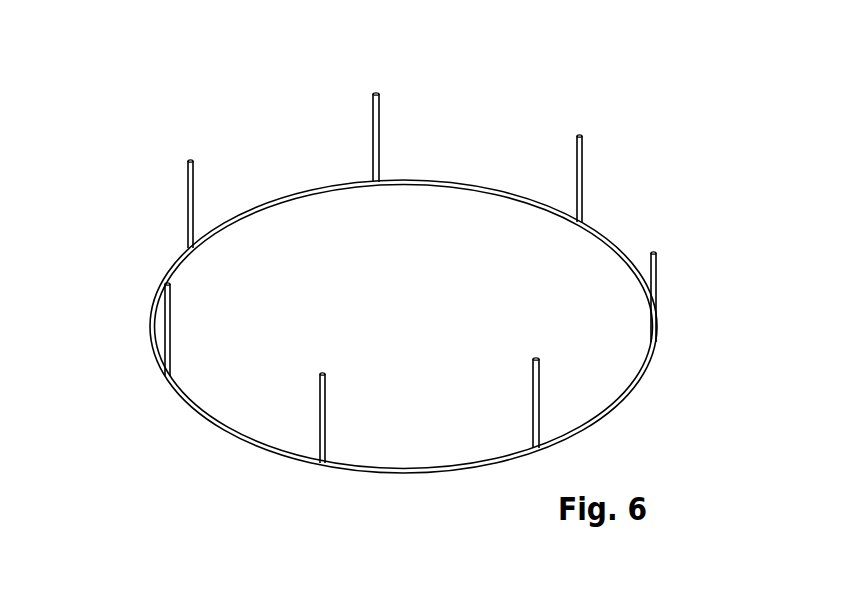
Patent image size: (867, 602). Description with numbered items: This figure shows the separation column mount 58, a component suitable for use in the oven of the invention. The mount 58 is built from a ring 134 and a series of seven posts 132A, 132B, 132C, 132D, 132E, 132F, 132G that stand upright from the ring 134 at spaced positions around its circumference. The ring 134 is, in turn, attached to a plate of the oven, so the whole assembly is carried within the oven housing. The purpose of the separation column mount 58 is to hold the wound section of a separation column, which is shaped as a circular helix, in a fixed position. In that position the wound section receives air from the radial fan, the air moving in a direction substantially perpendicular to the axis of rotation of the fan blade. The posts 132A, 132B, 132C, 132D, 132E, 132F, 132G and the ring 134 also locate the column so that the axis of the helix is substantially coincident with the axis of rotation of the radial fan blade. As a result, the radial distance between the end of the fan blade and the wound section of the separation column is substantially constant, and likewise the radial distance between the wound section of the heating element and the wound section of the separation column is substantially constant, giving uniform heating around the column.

The separation column mount 58 is at (514, 72).
The ring 134 is at (386, 471).
The post 132A is at (165, 337).
The post 132B is at (188, 195).
The post 132C is at (373, 132).
The post 132D is at (582, 175).
The post 132E is at (656, 304).
The post 132F is at (539, 403).
The post 132G is at (321, 417).